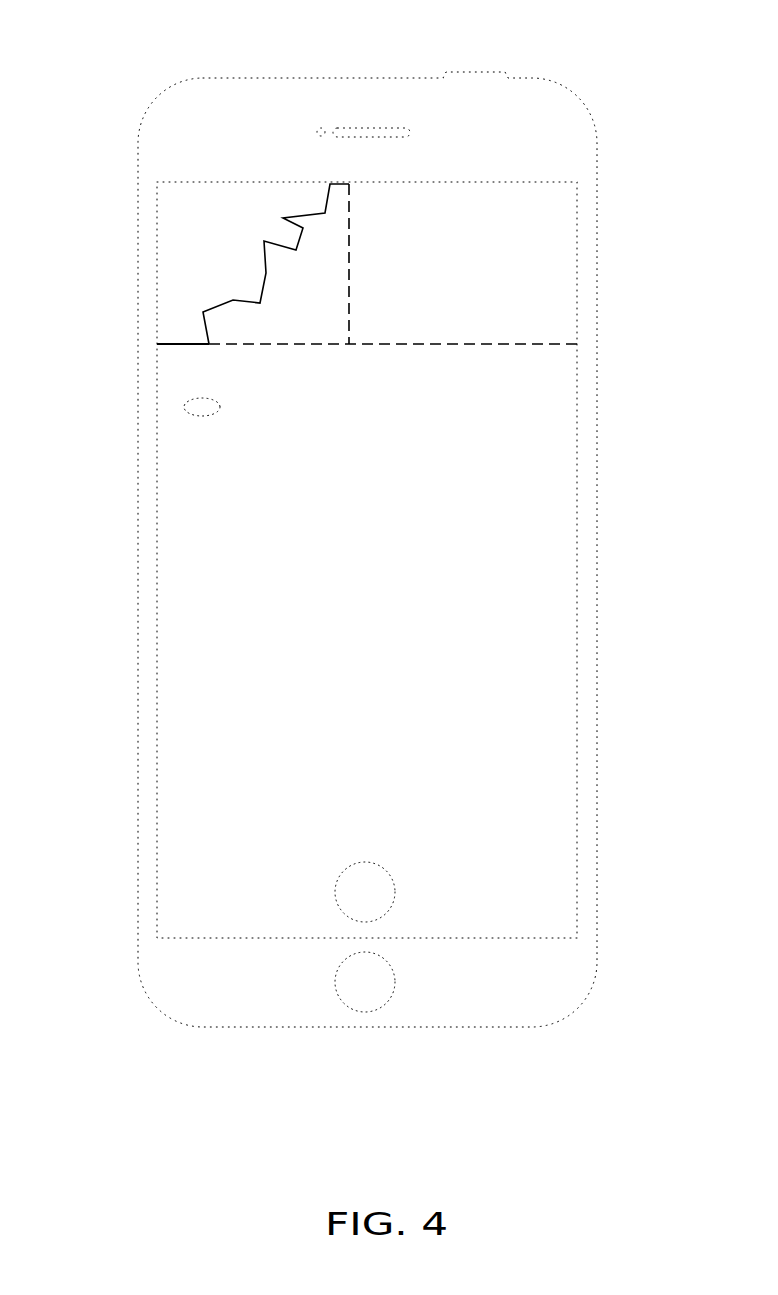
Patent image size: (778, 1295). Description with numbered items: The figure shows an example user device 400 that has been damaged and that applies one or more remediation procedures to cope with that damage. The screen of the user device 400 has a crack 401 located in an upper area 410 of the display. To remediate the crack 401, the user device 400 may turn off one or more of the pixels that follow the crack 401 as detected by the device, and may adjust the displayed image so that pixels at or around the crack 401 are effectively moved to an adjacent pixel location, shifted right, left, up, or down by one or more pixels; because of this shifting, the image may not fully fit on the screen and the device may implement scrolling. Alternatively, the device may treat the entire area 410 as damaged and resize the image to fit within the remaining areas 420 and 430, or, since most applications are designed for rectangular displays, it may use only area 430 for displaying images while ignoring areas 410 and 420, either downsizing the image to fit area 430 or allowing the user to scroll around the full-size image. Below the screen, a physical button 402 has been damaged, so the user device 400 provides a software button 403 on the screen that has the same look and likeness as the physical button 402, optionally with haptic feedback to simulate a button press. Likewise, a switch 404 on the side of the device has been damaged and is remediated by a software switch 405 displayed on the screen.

The user device 400 is at (138, 76).
The crack 401 is at (276, 264).
The physical button 402 is at (397, 982).
The software button 403 is at (397, 888).
The switch 404 is at (312, 361).
The software switch 405 is at (208, 433).
The area 410 is at (318, 264).
The area 420 is at (533, 316).
The area 430 is at (533, 903).